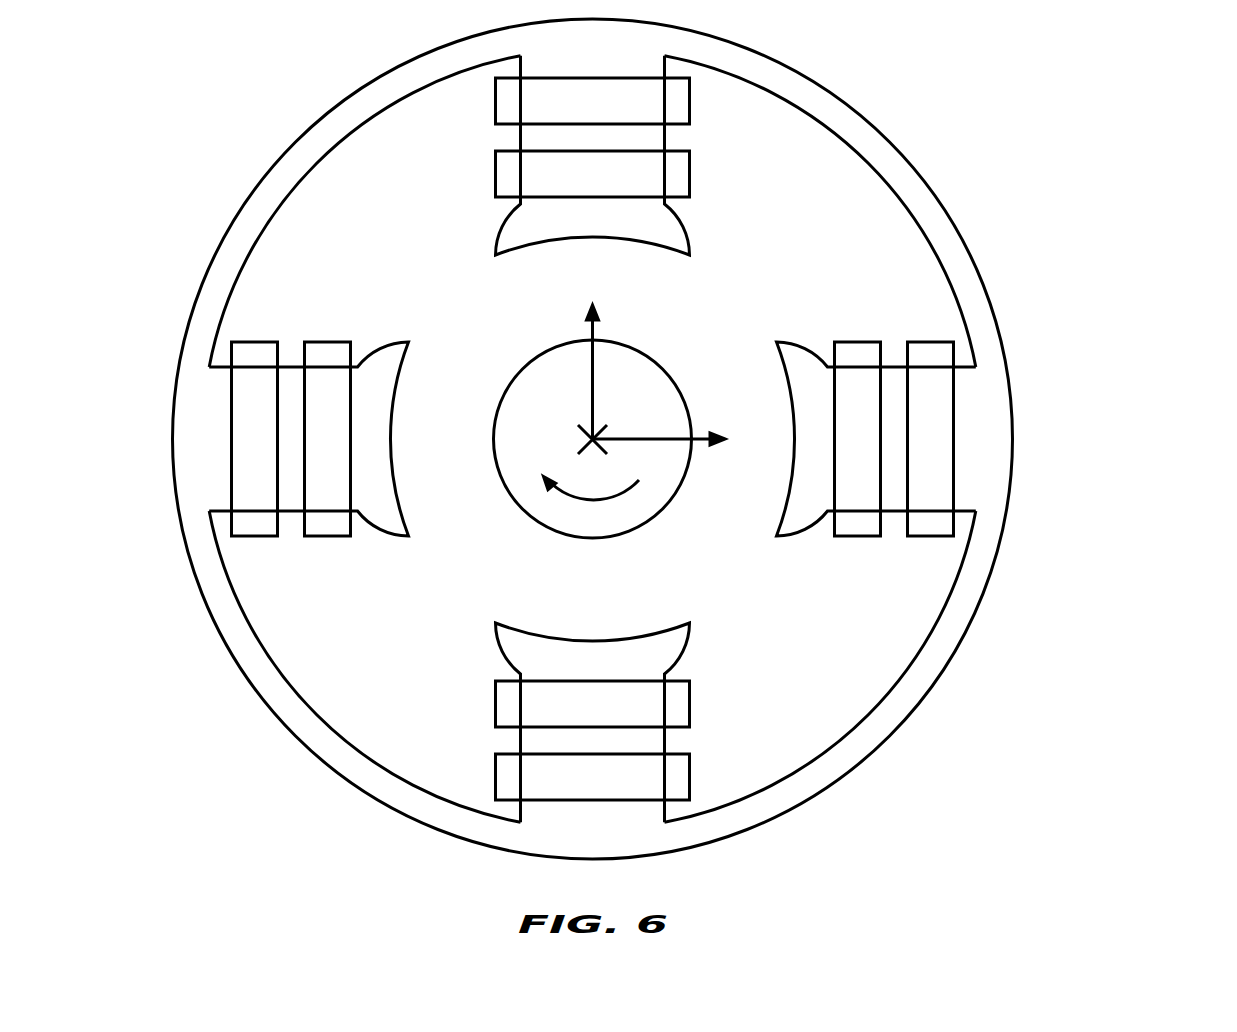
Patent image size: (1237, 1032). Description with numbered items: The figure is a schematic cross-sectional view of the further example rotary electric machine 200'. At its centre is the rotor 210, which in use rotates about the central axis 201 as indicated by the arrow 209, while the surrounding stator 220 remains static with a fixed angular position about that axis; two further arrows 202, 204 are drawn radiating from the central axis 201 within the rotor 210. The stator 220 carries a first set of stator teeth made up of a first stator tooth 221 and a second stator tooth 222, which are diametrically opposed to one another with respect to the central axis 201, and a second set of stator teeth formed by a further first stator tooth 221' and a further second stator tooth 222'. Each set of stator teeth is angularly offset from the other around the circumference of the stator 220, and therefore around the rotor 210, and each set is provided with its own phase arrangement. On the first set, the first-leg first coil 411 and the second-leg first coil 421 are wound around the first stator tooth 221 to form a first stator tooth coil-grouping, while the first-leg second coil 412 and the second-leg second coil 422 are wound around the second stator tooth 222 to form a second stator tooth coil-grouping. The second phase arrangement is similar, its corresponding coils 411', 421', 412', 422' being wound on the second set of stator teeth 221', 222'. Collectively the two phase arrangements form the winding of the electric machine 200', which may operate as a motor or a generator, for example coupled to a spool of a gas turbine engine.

The further example rotary electric machine 200' is at (705, 439).
The stator 220 is at (242, 676).
The first stator tooth 221 is at (593, 171).
The second stator tooth 222 is at (619, 698).
The first stator tooth of the second set 221' is at (351, 439).
The second stator tooth of the second set 222' is at (839, 439).
The first-leg first coil 411 is at (553, 156).
The second-leg first coil 421 is at (631, 128).
The first-leg second coil 412 is at (551, 730).
The second-leg second coil 422 is at (646, 760).
The first-leg first coil of the second phase arrangement 411' is at (278, 400).
The second-leg first coil of the second phase arrangement 421' is at (346, 480).
The first-leg second coil of the second phase arrangement 412' is at (864, 392).
The second-leg second coil of the second phase arrangement 422' is at (903, 484).
The rotor 210 is at (608, 395).
The central axis 201 is at (587, 443).
The first reference direction 202 is at (590, 328).
The second reference direction 204 is at (697, 440).
The arrow 209 is at (577, 497).